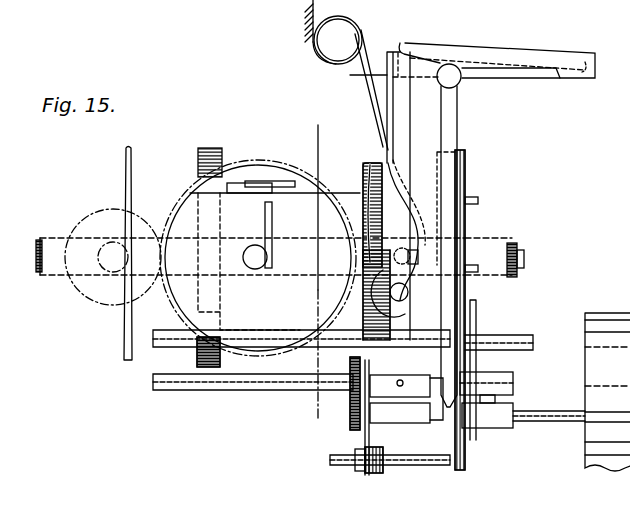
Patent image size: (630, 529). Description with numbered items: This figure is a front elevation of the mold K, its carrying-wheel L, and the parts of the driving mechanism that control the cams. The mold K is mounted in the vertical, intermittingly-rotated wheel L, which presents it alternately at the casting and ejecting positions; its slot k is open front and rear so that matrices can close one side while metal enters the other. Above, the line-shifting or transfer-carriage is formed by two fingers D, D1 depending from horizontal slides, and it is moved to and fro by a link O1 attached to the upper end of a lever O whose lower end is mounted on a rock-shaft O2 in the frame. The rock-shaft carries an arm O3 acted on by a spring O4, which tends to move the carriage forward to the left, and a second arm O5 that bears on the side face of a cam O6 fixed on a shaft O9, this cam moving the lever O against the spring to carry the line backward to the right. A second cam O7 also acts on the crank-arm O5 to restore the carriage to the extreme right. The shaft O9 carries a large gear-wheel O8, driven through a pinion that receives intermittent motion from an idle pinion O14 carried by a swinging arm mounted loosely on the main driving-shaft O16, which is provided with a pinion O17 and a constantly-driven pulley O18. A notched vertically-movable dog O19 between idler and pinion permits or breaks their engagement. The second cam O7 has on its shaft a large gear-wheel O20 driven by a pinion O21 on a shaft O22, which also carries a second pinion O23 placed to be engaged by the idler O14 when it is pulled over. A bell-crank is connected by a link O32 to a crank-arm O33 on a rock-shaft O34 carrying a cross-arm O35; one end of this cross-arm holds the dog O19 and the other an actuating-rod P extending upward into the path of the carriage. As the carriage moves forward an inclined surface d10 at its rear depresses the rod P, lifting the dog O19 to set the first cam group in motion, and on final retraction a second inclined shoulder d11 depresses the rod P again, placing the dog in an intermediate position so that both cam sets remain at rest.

The lever O is at (407, 135).
The bearing O1 is at (378, 352).
The rock-shaft O2 is at (399, 301).
The arm O3 is at (405, 232).
The spring O4 is at (380, 110).
The second arm O5 is at (413, 274).
The cam O6 is at (395, 303).
The second cam O7 is at (388, 165).
The gear-wheel O8 is at (465, 170).
The shaft O9 is at (533, 247).
The idle pinion O14 is at (480, 371).
The main driving-shaft O16 is at (557, 411).
The pinion O17 is at (470, 445).
The pulley O18 is at (607, 392).
The dog O19 is at (473, 305).
The gear-wheel O20 is at (194, 147).
The pinion O21 is at (207, 367).
The shaft O22 is at (515, 337).
The second pinion O23 is at (463, 333).
The link O32 is at (368, 437).
The crank-arm O33 is at (365, 470).
The rock-shaft O34 is at (420, 462).
The cross-arm O35 is at (475, 467).
The actuating-rod P is at (456, 122).
The mold K is at (243, 192).
The cam plate k is at (260, 180).
The wheel L is at (251, 235).
The finger D is at (616, 101).
The finger D1 is at (375, 83).
The inclined surface d10 is at (557, 70).
The second inclined shoulder d11 is at (447, 67).